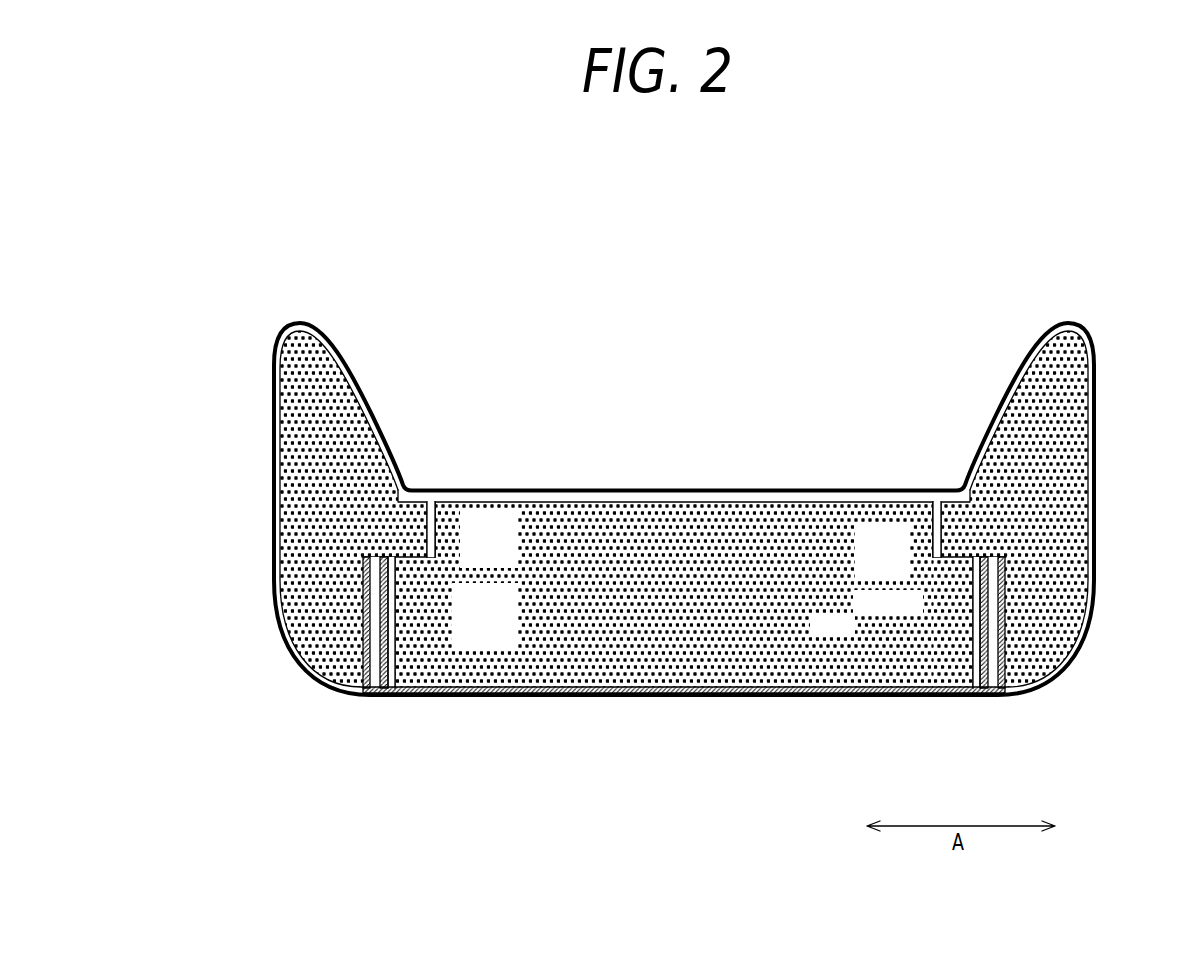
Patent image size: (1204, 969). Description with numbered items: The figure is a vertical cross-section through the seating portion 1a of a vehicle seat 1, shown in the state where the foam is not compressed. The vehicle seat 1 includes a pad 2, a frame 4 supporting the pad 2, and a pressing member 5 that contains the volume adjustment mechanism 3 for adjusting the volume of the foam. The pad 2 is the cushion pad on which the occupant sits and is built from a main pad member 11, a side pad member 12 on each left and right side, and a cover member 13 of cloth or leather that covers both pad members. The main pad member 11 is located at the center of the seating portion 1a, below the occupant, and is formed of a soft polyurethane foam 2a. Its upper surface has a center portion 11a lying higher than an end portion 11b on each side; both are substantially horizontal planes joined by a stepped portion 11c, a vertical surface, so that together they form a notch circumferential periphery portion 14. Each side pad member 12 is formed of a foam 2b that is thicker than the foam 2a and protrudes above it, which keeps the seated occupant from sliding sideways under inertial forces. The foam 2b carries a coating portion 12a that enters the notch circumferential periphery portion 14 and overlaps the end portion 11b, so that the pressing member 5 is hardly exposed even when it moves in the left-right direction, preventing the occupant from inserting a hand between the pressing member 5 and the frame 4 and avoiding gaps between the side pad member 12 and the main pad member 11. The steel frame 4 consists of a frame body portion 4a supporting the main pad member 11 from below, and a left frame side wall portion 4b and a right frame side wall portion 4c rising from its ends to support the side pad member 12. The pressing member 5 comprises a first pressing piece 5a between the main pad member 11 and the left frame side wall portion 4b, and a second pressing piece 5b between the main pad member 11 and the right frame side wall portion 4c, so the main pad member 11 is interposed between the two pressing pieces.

The vehicle seat 1 is at (666, 501).
The seating portion 1a is at (666, 501).
The pad 2 is at (666, 502).
The foam 2a is at (688, 547).
The foam 2b is at (666, 501).
The volume adjustment mechanism 3 is at (403, 633).
The frame 4 is at (684, 681).
The frame body portion 4a is at (686, 697).
The left frame side wall portion 4b is at (367, 650).
The right frame side wall portion 4c is at (912, 659).
The pressing member 5 is at (684, 622).
The first pressing piece 5a is at (388, 606).
The second pressing piece 5b is at (985, 617).
The main pad member 11 is at (688, 547).
The center portion 11a is at (810, 500).
The end portion 11b is at (405, 560).
The stepped portion 11c is at (436, 518).
The side pad member 12 is at (666, 501).
The coating portion 12a is at (418, 548).
The cover member 13 is at (1097, 416).
The notch circumferential periphery portion 14 is at (433, 490).